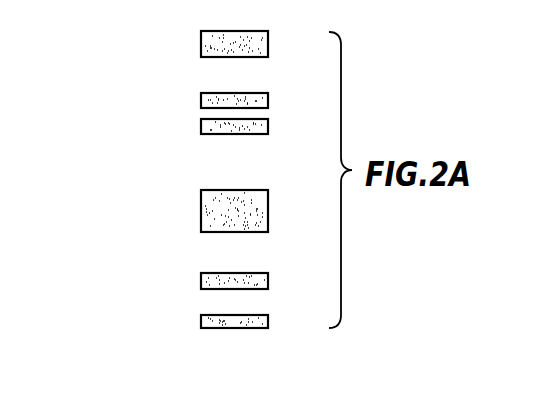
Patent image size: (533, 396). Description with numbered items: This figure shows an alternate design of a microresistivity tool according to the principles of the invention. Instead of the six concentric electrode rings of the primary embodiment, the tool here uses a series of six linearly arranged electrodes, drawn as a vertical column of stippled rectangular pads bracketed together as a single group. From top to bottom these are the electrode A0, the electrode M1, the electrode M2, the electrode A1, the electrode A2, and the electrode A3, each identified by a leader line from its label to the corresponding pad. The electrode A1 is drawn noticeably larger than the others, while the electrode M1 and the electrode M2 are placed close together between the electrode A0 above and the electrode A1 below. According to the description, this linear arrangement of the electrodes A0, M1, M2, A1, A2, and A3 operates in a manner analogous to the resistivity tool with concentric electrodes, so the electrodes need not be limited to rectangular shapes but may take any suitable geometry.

The electrode A0 is at (201, 43).
The electrode M1 is at (201, 99).
The electrode M2 is at (201, 125).
The electrode A1 is at (201, 204).
The electrode A2 is at (201, 279).
The electrode A3 is at (201, 319).